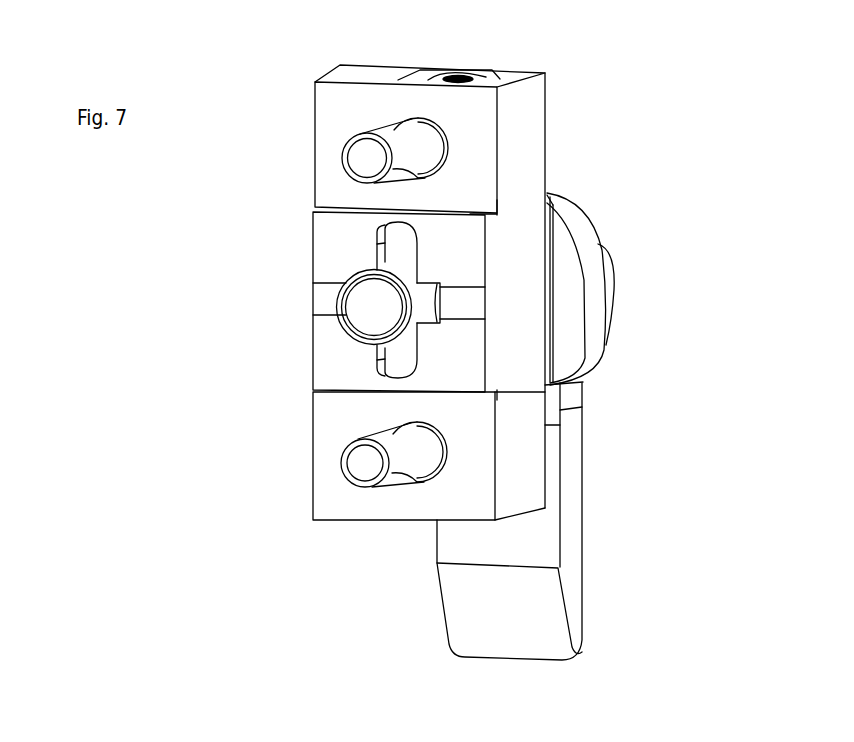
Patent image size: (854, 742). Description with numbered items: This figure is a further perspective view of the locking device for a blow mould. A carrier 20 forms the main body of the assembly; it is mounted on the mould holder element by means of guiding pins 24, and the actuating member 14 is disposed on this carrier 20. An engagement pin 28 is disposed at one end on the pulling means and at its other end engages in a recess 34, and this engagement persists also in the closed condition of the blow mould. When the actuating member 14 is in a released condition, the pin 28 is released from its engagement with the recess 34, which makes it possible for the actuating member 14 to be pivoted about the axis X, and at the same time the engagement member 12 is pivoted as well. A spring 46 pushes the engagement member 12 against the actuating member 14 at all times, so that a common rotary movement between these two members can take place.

The engagement member 12 is at (593, 303).
The actuating member 14 is at (572, 485).
The carrier 20 is at (528, 118).
The guiding pins 24 is at (365, 457).
The engagement pin 28 is at (425, 300).
The recess 34 is at (475, 300).
The spring 46 is at (456, 76).